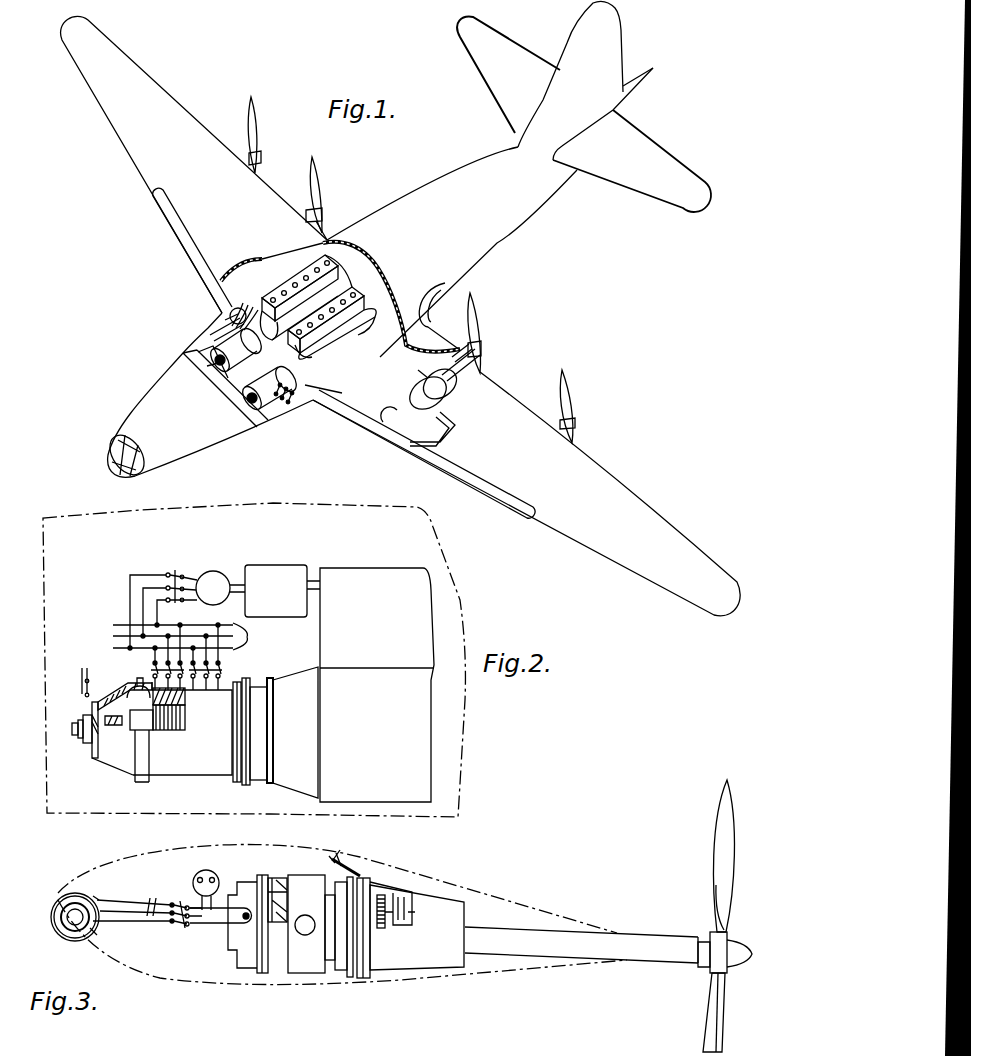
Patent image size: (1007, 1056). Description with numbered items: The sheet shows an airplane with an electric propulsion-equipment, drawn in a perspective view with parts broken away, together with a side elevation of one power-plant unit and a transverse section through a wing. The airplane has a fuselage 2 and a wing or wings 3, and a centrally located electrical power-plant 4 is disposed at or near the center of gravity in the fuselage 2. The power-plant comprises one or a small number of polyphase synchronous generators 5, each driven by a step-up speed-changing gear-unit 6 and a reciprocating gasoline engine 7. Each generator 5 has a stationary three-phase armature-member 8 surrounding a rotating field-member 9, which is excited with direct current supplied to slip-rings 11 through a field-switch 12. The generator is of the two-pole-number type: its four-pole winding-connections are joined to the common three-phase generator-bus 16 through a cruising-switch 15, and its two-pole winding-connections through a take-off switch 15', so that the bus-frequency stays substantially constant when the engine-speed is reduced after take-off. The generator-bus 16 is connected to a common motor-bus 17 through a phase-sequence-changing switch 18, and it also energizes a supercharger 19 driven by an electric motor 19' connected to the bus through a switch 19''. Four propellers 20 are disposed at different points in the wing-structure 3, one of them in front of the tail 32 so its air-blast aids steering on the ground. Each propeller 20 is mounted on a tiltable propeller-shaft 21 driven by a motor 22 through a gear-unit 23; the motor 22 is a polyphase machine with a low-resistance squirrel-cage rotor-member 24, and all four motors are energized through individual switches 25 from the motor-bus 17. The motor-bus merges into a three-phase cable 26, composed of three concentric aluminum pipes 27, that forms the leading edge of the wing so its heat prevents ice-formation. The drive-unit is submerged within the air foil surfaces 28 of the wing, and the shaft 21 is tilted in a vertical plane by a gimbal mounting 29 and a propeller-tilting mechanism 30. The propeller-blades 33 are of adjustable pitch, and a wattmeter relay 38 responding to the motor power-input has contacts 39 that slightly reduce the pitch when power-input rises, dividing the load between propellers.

In FIG. 1, the fuselage 2 is at (505, 251).
In FIG. 2, the fuselage 2 is at (290, 508).
In FIG. 1, the wing 3 is at (197, 128).
In FIG. 3, the wing 3 is at (442, 876).
In FIG. 1, the electrical power-plant 4 is at (333, 271).
In FIG. 2, the electrical power-plant 4 is at (377, 550).
In FIG. 1, the polyphase synchronous generator 5 is at (241, 355).
In FIG. 2, the polyphase synchronous generator 5 is at (213, 766).
In FIG. 1, the step-up speed-changing gear-unit 6 is at (266, 343).
In FIG. 2, the step-up speed-changing gear-unit 6 is at (292, 782).
In FIG. 1, the reciprocating gasoline engine 7 is at (362, 338).
In FIG. 2, the reciprocating gasoline engine 7 is at (332, 641).
In FIG. 2, the armature-member 8 is at (186, 698).
In FIG. 2, the field-member 9 is at (186, 716).
In FIG. 2, the slip-rings 11 is at (84, 738).
In FIG. 1, the field-switch 12 is at (240, 382).
In FIG. 2, the field-switch 12 is at (92, 698).
In FIG. 1, the cruising-switch 15 is at (291, 398).
In FIG. 2, the cruising-switch 15 is at (219, 673).
In FIG. 2, the take-off switch 15' is at (156, 671).
In FIG. 1, the generator-bus 16 is at (222, 332).
In FIG. 2, the generator-bus 16 is at (190, 643).
In FIG. 1, the motor-bus 17 is at (246, 310).
In FIG. 3, the motor-bus 17 is at (132, 901).
In FIG. 1, the phase-sequence-changing switch 18 is at (225, 320).
In FIG. 2, the supercharger 19 is at (282, 582).
In FIG. 2, the electric motor 19' is at (220, 578).
In FIG. 2, the switch 19'' is at (163, 601).
In FIG. 1, the propeller 20 is at (315, 182).
In FIG. 3, the propeller 20 is at (723, 858).
In FIG. 1, the propeller-shaft 21 is at (312, 212).
In FIG. 3, the propeller-shaft 21 is at (663, 947).
In FIG. 1, the motor 22 is at (421, 386).
In FIG. 3, the motor 22 is at (238, 953).
In FIG. 1, the gear-unit 23 is at (447, 386).
In FIG. 3, the gear-unit 23 is at (409, 912).
In FIG. 3, the squirrel-cage rotor-member 24 is at (272, 882).
In FIG. 1, the switch 25 is at (446, 411).
In FIG. 3, the switch 25 is at (184, 930).
In FIG. 1, the three-phase cable 26 is at (246, 268).
In FIG. 3, the concentric aluminum pipes 27 is at (62, 893).
In FIG. 1, the air foil surfaces 28 is at (192, 220).
In FIG. 3, the air foil surfaces 28 is at (330, 858).
In FIG. 3, the gimbal mounting 29 is at (313, 911).
In FIG. 3, the propeller-tilting mechanism 30 is at (360, 870).
In FIG. 1, the tail 32 is at (508, 102).
In FIG. 3, the propeller-blades 33 is at (717, 878).
In FIG. 3, the wattmeter relay 38 is at (202, 878).
In FIG. 3, the contacts 39 is at (213, 878).